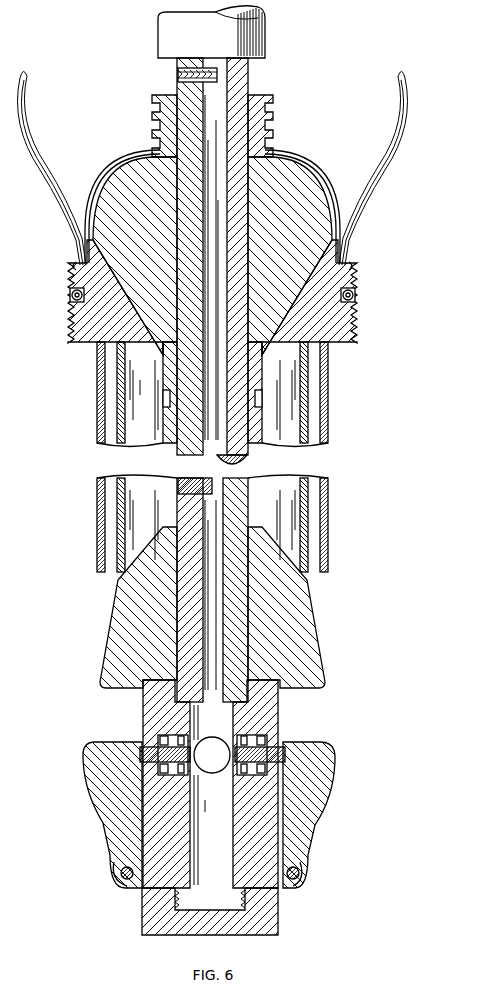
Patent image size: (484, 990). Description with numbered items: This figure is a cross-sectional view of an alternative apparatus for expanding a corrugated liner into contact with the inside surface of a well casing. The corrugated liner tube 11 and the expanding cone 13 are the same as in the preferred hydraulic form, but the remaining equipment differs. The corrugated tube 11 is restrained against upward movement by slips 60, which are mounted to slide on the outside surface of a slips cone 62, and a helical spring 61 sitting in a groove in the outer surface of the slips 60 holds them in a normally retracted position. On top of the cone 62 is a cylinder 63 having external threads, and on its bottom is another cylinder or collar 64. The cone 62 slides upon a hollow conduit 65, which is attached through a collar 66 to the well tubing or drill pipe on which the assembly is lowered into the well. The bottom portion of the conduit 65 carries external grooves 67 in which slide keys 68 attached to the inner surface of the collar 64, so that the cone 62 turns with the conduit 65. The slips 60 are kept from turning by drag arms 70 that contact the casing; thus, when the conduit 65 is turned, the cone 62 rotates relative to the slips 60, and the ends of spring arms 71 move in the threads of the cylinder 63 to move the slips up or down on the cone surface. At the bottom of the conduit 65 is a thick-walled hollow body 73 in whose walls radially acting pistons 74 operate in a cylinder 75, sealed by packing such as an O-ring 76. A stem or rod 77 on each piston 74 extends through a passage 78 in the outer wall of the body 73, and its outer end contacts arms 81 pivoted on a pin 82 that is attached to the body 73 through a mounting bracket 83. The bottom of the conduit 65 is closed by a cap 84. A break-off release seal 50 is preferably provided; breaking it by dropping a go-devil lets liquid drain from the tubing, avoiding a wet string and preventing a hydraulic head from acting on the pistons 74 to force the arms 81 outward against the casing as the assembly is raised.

The corrugated liner tube 11 is at (329, 488).
The expanding cone 13 is at (305, 594).
The break-off release seal 50 is at (180, 72).
The slips 60 is at (362, 270).
The helical spring 61 is at (356, 296).
The slips cone 62 is at (323, 192).
The cylinder having external threads 63 is at (274, 98).
The collar 64 is at (260, 383).
The hollow conduit 65 is at (250, 80).
The collar 66 is at (262, 22).
The external grooves 67 is at (240, 462).
The keys 68 is at (258, 426).
The drag arms 70 is at (410, 112).
The spring arms 71 is at (313, 148).
The hollow body 73 is at (143, 710).
The pistons 74 is at (185, 745).
The cylinder 75 is at (233, 764).
The O-ring 76 is at (170, 742).
The rod 77 is at (283, 742).
The passage 78 is at (283, 770).
The arms 81 is at (338, 775).
The pin 82 is at (300, 870).
The mounting bracket 83 is at (308, 882).
The cap 84 is at (280, 912).